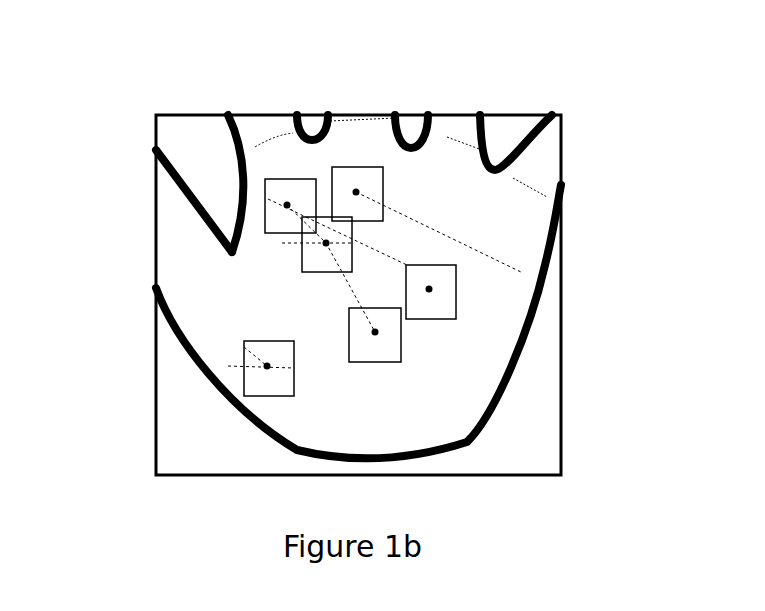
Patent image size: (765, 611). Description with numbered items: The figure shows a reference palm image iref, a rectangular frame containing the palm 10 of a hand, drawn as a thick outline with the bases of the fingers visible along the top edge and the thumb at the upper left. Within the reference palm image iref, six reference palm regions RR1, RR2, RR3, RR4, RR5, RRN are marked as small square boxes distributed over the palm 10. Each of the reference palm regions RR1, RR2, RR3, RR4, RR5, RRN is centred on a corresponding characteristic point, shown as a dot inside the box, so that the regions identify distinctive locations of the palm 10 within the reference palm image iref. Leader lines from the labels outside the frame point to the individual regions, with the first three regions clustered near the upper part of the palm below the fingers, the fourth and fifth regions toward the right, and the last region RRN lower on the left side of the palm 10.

The reference palm image iref is at (540, 456).
The palm 10 is at (218, 353).
The first reference palm region RR1 is at (265, 217).
The second reference palm region RR2 is at (362, 167).
The third reference palm region RR3 is at (302, 262).
The fourth reference palm region RR4 is at (456, 285).
The fifth reference palm region RR5 is at (401, 347).
The Nth reference palm region RRN is at (247, 373).